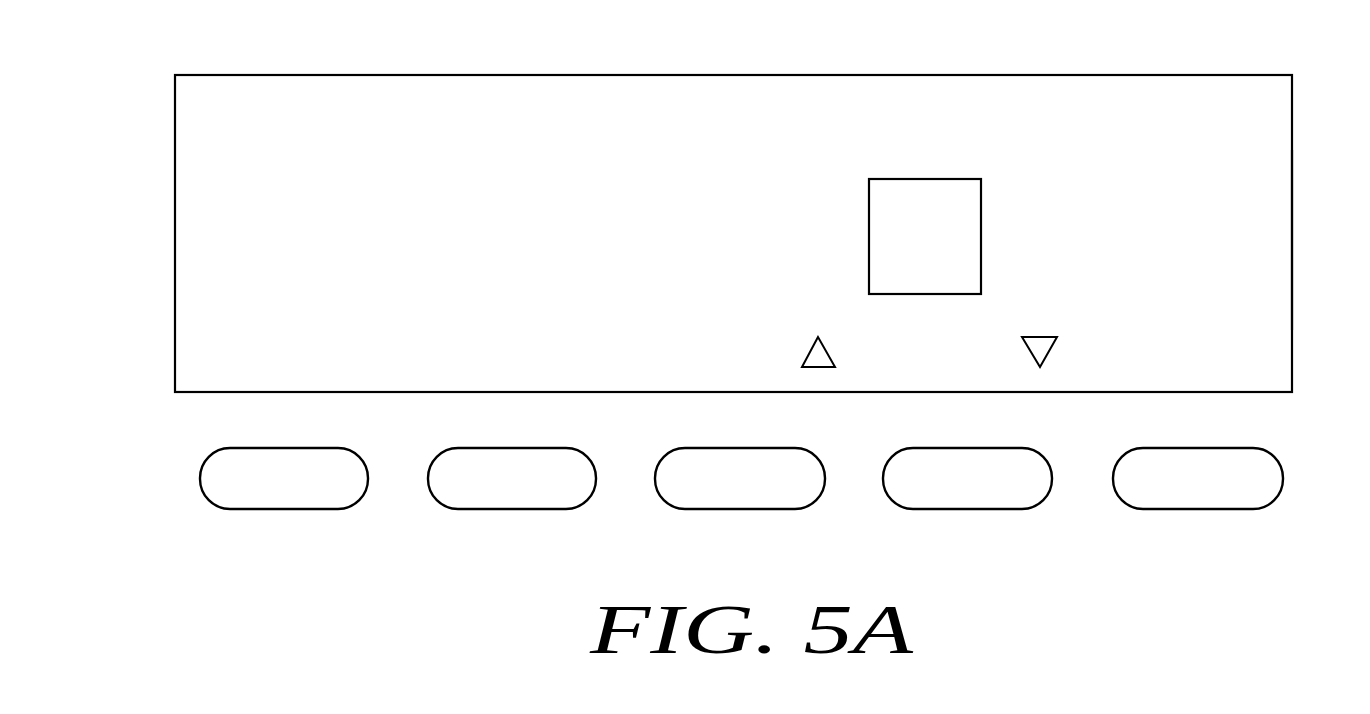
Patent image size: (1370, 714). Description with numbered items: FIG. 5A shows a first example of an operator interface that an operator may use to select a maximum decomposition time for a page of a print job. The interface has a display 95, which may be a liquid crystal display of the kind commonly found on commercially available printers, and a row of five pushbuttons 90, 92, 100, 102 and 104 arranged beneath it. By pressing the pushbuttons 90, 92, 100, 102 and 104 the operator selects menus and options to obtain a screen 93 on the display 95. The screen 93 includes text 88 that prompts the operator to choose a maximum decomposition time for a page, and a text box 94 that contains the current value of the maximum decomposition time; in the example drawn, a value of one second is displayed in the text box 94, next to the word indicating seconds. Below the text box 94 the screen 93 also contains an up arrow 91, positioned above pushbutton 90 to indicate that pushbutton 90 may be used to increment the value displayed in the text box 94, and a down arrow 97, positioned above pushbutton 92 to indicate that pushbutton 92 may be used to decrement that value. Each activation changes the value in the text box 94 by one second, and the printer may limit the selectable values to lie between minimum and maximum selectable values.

The text 88 is at (666, 185).
The pushbutton 90 is at (765, 511).
The up arrow 91 is at (805, 353).
The pushbutton 92 is at (1000, 511).
The screen 93 is at (1237, 90).
The text box 94 is at (903, 179).
The display 95 is at (1294, 241).
The down arrow 97 is at (1052, 350).
The pushbutton 100 is at (333, 511).
The pushbutton 102 is at (553, 511).
The pushbutton 104 is at (1165, 511).